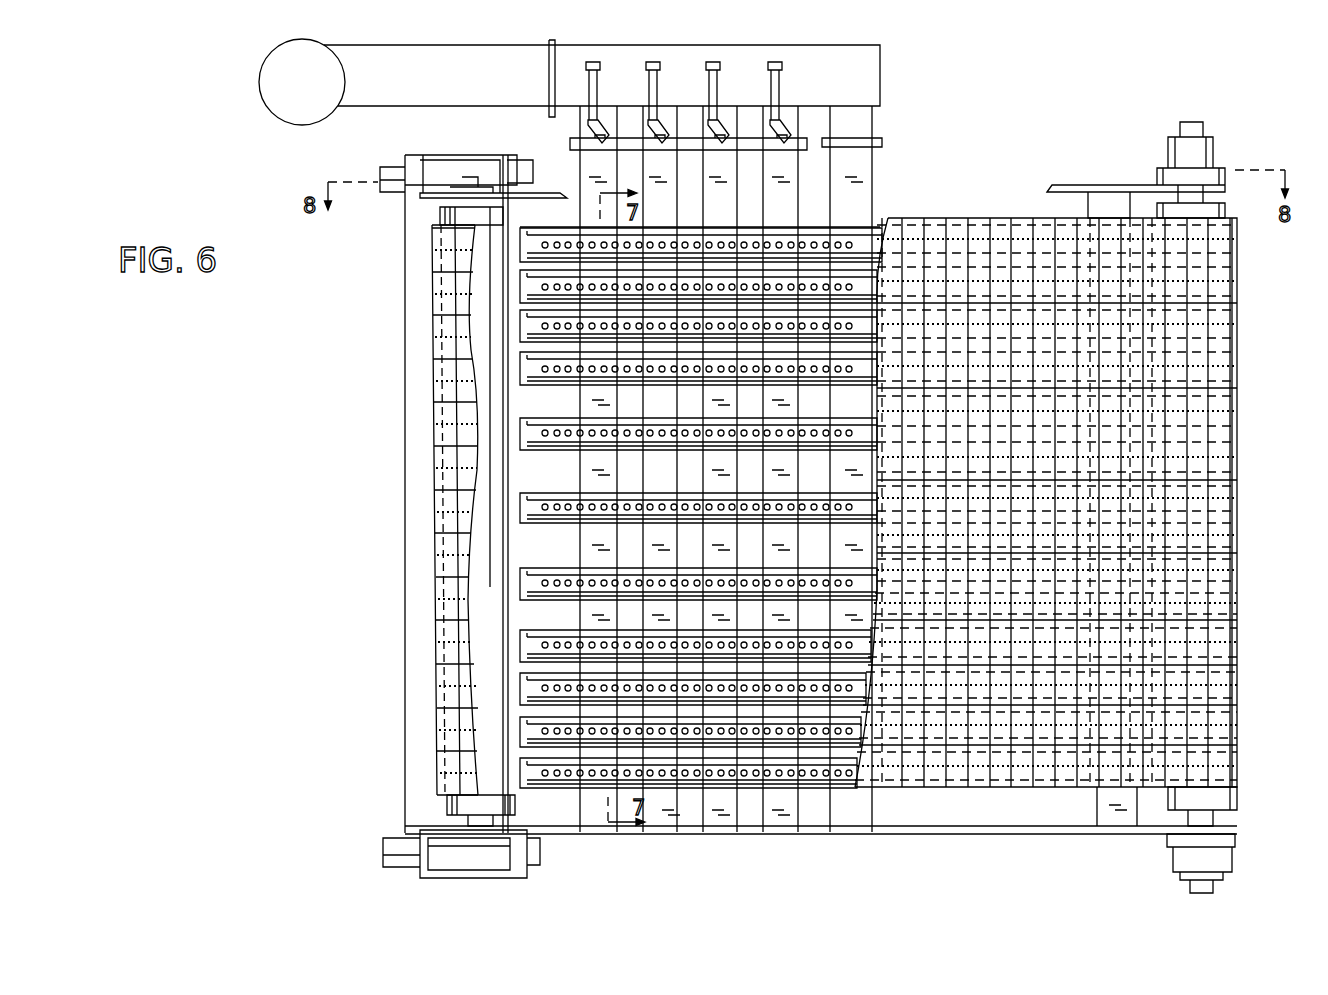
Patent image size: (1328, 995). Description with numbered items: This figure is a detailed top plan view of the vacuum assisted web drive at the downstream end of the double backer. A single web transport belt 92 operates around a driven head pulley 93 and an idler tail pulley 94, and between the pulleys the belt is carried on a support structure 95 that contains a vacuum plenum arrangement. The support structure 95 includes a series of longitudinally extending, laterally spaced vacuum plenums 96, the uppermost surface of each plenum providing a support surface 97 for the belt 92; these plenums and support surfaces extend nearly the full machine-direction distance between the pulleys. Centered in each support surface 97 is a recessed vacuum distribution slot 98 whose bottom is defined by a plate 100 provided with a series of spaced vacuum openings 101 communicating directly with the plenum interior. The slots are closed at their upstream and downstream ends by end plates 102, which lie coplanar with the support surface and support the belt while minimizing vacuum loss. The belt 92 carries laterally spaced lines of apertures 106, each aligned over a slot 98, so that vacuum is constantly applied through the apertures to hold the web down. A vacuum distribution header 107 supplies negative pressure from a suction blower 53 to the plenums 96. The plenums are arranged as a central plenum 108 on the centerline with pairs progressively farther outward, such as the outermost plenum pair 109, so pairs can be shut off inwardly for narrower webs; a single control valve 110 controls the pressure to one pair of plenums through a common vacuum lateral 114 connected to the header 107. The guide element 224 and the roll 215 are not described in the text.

The suction blower 53 is at (264, 70).
The vacuum distribution header 107 is at (623, 55).
The control valve 110 is at (577, 140).
The vacuum lateral 114 is at (577, 163).
The vacuum distribution slot 98 is at (852, 238).
The support surface 97 is at (815, 235).
The plate 100 is at (573, 383).
The vacuum openings 101 is at (698, 383).
The tray guide 224 is at (603, 498).
The central plenum 108 is at (520, 512).
The outermost plenum pair 109 is at (520, 244).
The end plates 102 is at (520, 372).
The vacuum plenums 96 is at (527, 692).
The idler tail pulley 94 is at (457, 820).
The support structure 95 is at (768, 845).
The roll 215 is at (937, 235).
The apertures 106 is at (1013, 285).
The web transport belt 92 is at (918, 773).
The driven head pulley 93 is at (1225, 815).